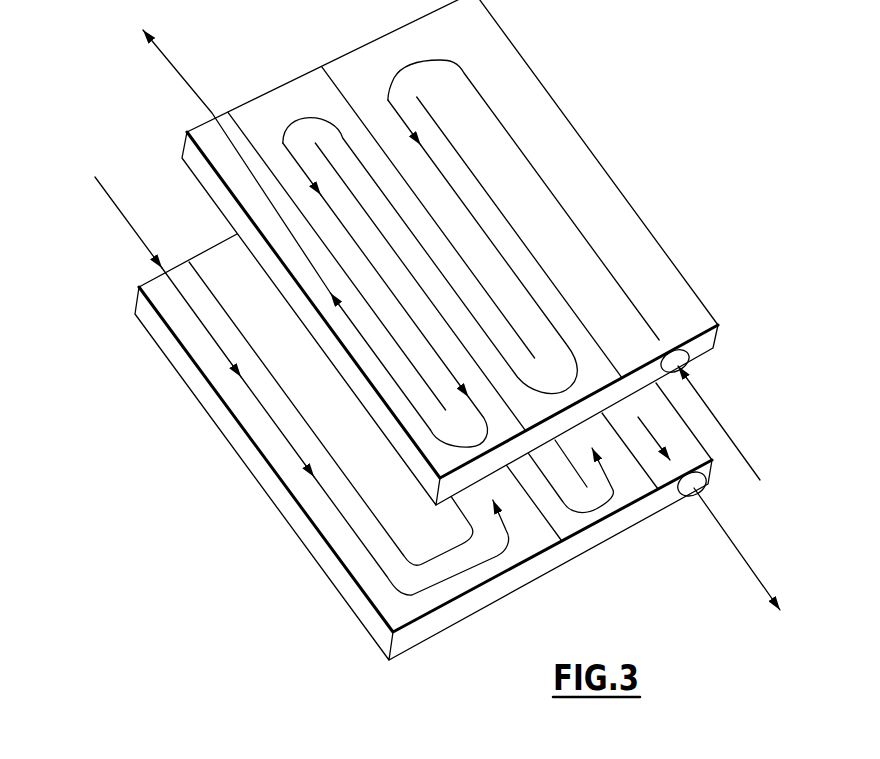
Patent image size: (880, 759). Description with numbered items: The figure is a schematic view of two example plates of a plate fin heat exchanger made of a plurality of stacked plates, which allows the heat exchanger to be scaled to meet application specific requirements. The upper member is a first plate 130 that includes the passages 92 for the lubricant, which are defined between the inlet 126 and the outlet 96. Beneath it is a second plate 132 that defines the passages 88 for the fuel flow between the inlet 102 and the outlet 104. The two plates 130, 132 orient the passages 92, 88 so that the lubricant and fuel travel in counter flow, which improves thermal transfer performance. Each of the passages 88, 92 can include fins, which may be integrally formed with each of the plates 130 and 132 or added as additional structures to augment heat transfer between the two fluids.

The passages 92 is at (553, 140).
The outlet 96 is at (233, 106).
The first plate 130 is at (652, 231).
The inlet 126 is at (700, 354).
The passages 88 is at (262, 429).
The second plate 132 is at (306, 522).
The inlet 102 is at (135, 287).
The outlet 104 is at (684, 500).